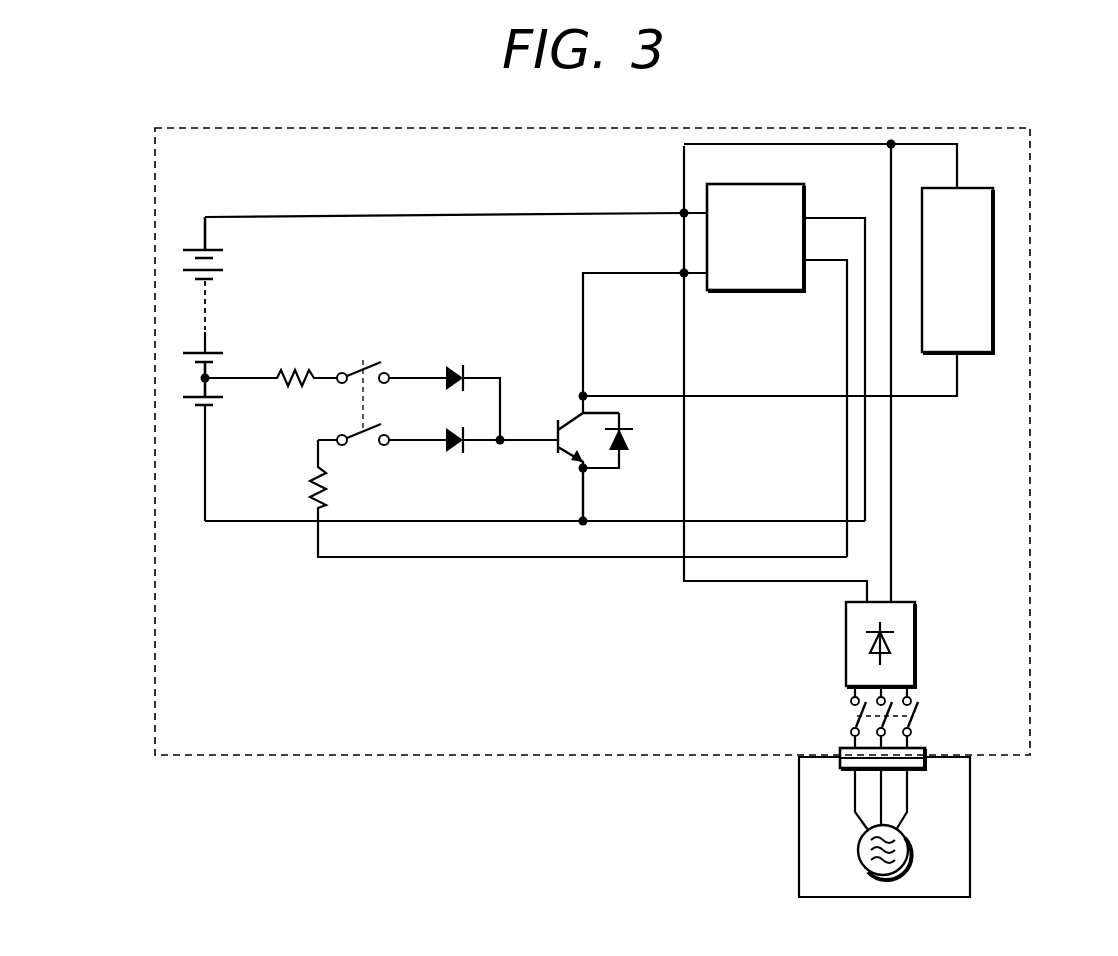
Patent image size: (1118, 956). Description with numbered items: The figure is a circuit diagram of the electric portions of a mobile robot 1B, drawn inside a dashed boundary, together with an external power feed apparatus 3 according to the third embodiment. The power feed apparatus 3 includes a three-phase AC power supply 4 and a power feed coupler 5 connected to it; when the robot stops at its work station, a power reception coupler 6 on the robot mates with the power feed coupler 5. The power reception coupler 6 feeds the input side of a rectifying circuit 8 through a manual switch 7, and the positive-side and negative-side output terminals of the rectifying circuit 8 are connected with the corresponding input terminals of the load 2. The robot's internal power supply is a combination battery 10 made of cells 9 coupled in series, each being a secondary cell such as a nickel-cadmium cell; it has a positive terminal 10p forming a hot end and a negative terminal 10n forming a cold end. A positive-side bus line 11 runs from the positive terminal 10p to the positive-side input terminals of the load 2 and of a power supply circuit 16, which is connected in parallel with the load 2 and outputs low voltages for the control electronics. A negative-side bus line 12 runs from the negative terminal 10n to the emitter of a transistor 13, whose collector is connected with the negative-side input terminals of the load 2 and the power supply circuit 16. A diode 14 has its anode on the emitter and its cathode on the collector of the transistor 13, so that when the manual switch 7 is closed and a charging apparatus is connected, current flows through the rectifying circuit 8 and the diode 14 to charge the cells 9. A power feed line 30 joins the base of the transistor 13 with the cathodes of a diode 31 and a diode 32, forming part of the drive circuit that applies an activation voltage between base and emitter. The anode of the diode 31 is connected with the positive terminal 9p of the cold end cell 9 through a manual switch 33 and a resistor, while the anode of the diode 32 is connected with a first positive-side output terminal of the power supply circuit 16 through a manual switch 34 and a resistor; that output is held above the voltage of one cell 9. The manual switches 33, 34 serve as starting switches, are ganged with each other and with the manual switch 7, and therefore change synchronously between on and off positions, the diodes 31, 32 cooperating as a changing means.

The mobile robot 1B is at (1032, 190).
The load 2 is at (970, 188).
The power feed apparatus 3 is at (972, 790).
The three-phase AC power supply 4 is at (910, 850).
The power feed coupler 5 is at (838, 768).
The power reception coupler 6 is at (840, 752).
The manual switch 7 is at (920, 714).
The rectifying circuit 8 is at (917, 640).
The cell 9 is at (225, 400).
The positive terminal of cold end cell 9p is at (210, 375).
The combination battery 10 is at (254, 369).
The positive terminal 10p is at (207, 248).
The negative terminal 10n is at (218, 408).
The positive-side bus line 11 is at (505, 212).
The negative-side bus line 12 is at (545, 518).
The transistor 13 is at (568, 416).
The diode 14 is at (632, 438).
The power supply circuit 16 is at (775, 185).
The power feed line 30 is at (515, 442).
The diode 31 is at (453, 360).
The diode 32 is at (453, 455).
The manual switch 33 is at (363, 360).
The manual switch 34 is at (363, 448).